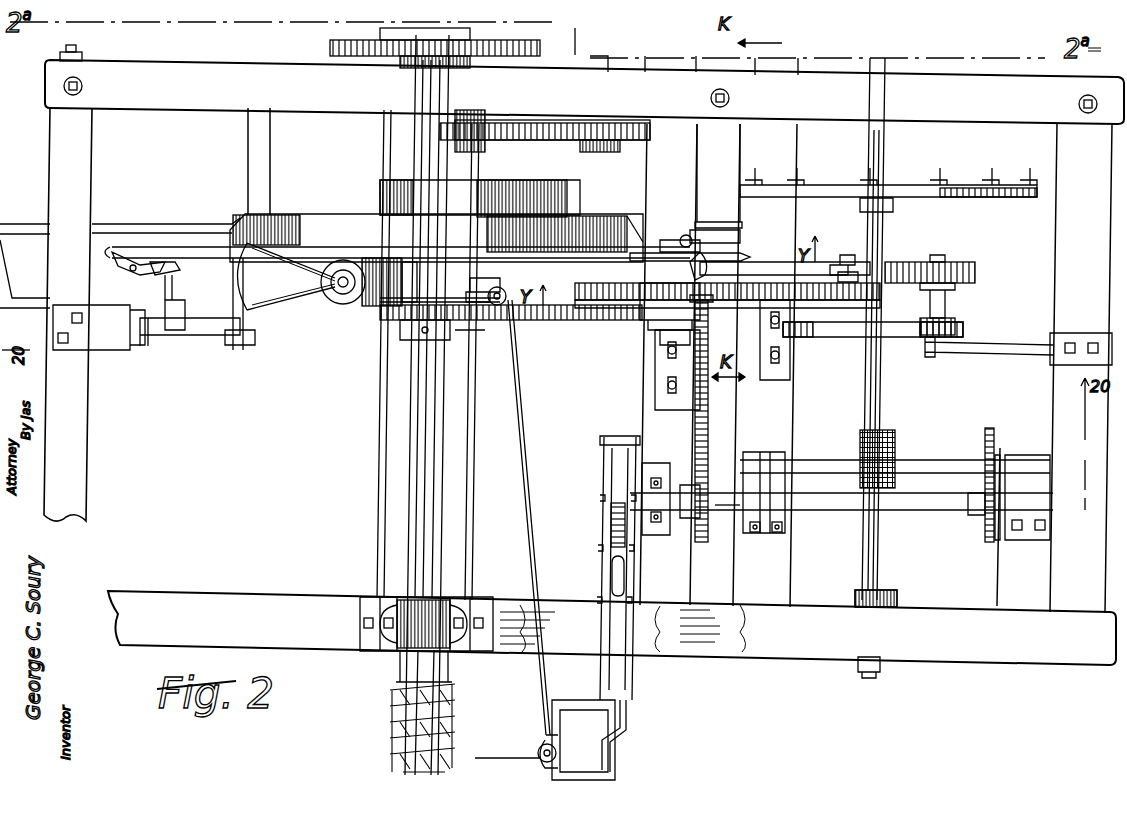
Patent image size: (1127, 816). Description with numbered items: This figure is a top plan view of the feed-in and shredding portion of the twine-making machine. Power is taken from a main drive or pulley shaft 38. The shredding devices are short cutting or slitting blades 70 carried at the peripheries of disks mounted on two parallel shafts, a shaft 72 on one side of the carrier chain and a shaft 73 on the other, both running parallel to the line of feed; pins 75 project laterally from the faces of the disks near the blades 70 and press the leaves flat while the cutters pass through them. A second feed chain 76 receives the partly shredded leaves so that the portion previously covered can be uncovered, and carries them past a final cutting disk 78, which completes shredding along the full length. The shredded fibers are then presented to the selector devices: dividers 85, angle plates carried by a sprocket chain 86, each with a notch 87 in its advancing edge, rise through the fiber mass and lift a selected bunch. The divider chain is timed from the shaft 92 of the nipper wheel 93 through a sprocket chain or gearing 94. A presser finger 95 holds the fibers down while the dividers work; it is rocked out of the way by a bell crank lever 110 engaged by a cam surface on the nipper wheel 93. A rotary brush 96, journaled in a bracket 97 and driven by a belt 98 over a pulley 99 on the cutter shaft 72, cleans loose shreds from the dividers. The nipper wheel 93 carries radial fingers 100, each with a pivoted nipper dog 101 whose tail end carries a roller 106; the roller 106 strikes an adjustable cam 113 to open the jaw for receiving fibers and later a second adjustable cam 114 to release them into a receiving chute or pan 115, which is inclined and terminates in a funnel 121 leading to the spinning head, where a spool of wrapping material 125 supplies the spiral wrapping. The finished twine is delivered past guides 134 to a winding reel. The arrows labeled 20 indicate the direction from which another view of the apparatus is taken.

The bracket 20 is at (99, 327).
The main drive or pulley shaft 38 is at (505, 163).
The cutting or slitting blades 70 is at (1031, 182).
The shaft 72 is at (887, 126).
The shaft 73 is at (600, 141).
The pins 75 is at (998, 178).
The second feed chain 76 is at (714, 426).
The final cutting disk 78 is at (1006, 194).
The dividers 85 is at (837, 265).
The sprocket chain 86 is at (765, 282).
The notch 87 is at (850, 270).
The shaft 92 is at (422, 152).
The nipper wheel 93 is at (326, 224).
The sprocket chain or gearing 94 is at (511, 309).
The presser finger 95 is at (742, 256).
The rotary brush 96 is at (965, 262).
The bracket 97 is at (993, 345).
The belt 98 is at (860, 340).
The pulley 99 is at (834, 340).
The radial fingers 100 is at (166, 219).
The nipper dog 101 is at (135, 268).
The rollers 106 is at (160, 283).
The bell crank lever 110 is at (688, 232).
The cam 113 is at (648, 527).
The second adjustable cam 114 is at (187, 308).
The receiving chute or pan 115 is at (118, 246).
The funnel 121 is at (292, 304).
The spool of wrapping material 125 is at (347, 318).
The guides 134 is at (500, 312).